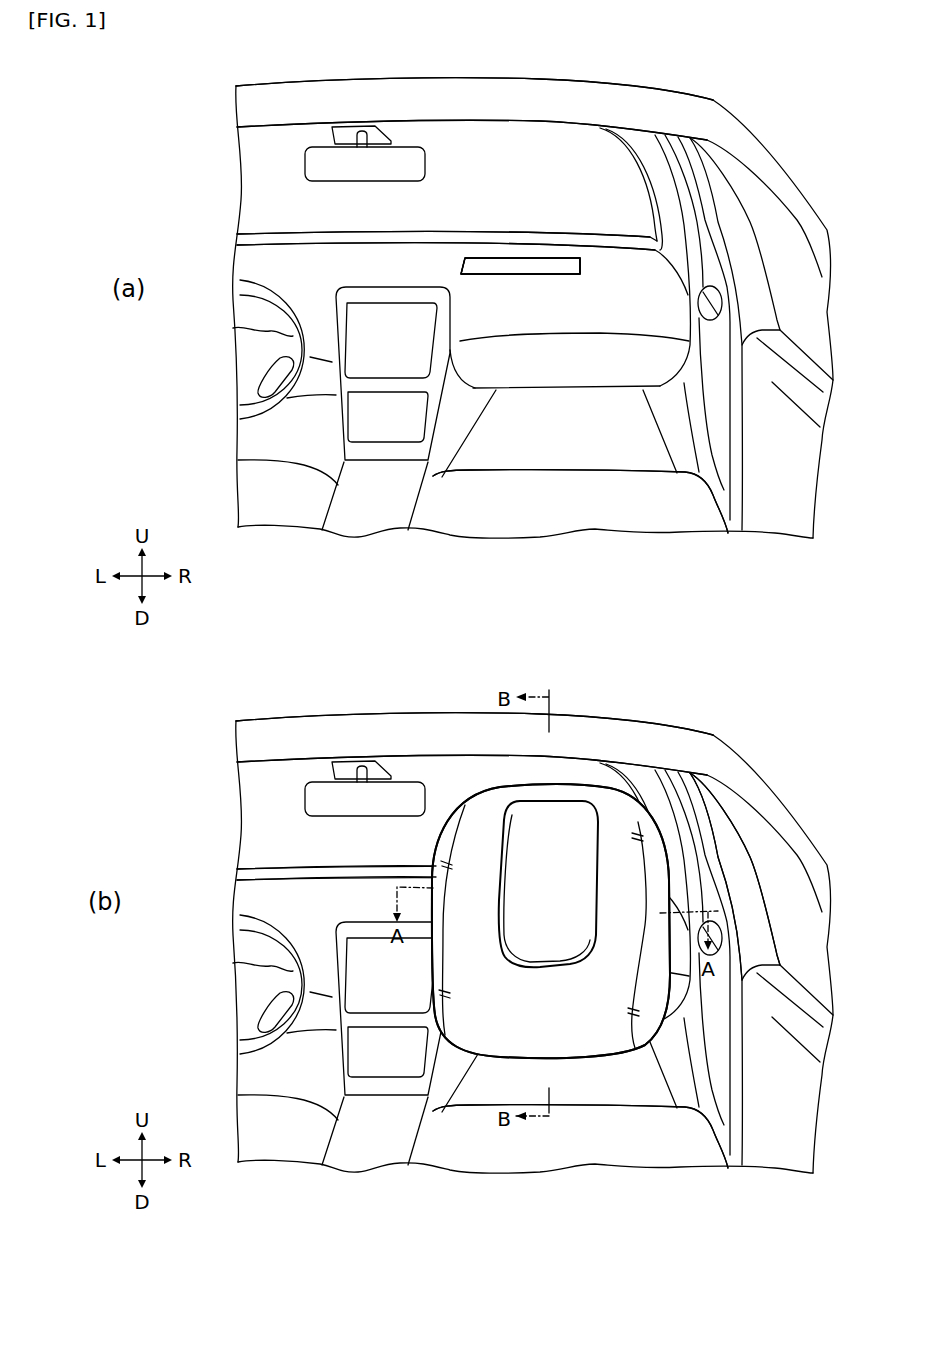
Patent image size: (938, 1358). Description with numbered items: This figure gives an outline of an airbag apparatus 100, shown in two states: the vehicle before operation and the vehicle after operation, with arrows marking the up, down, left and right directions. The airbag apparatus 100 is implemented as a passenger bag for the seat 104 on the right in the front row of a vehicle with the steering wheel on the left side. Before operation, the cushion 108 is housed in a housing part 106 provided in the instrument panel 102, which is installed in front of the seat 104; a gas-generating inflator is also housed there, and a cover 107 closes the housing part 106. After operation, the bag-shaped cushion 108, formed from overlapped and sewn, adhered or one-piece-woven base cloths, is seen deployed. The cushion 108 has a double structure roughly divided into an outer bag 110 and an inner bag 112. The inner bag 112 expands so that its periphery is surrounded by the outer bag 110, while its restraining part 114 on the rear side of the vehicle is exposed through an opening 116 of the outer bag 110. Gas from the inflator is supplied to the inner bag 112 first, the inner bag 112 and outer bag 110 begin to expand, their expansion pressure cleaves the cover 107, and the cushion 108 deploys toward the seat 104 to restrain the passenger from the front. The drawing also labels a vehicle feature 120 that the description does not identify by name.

The airbag apparatus 100 is at (542, 245).
The instrument panel 102 is at (480, 248).
The seat 104 is at (544, 478).
The housing part 106 is at (523, 273).
The cover 107 is at (583, 266).
The cushion 108 is at (568, 834).
The outer bag 110 is at (652, 858).
The inner bag 112 is at (690, 787).
The restraining part 114 is at (598, 840).
The opening 116 is at (607, 835).
The roof 120 is at (506, 148).